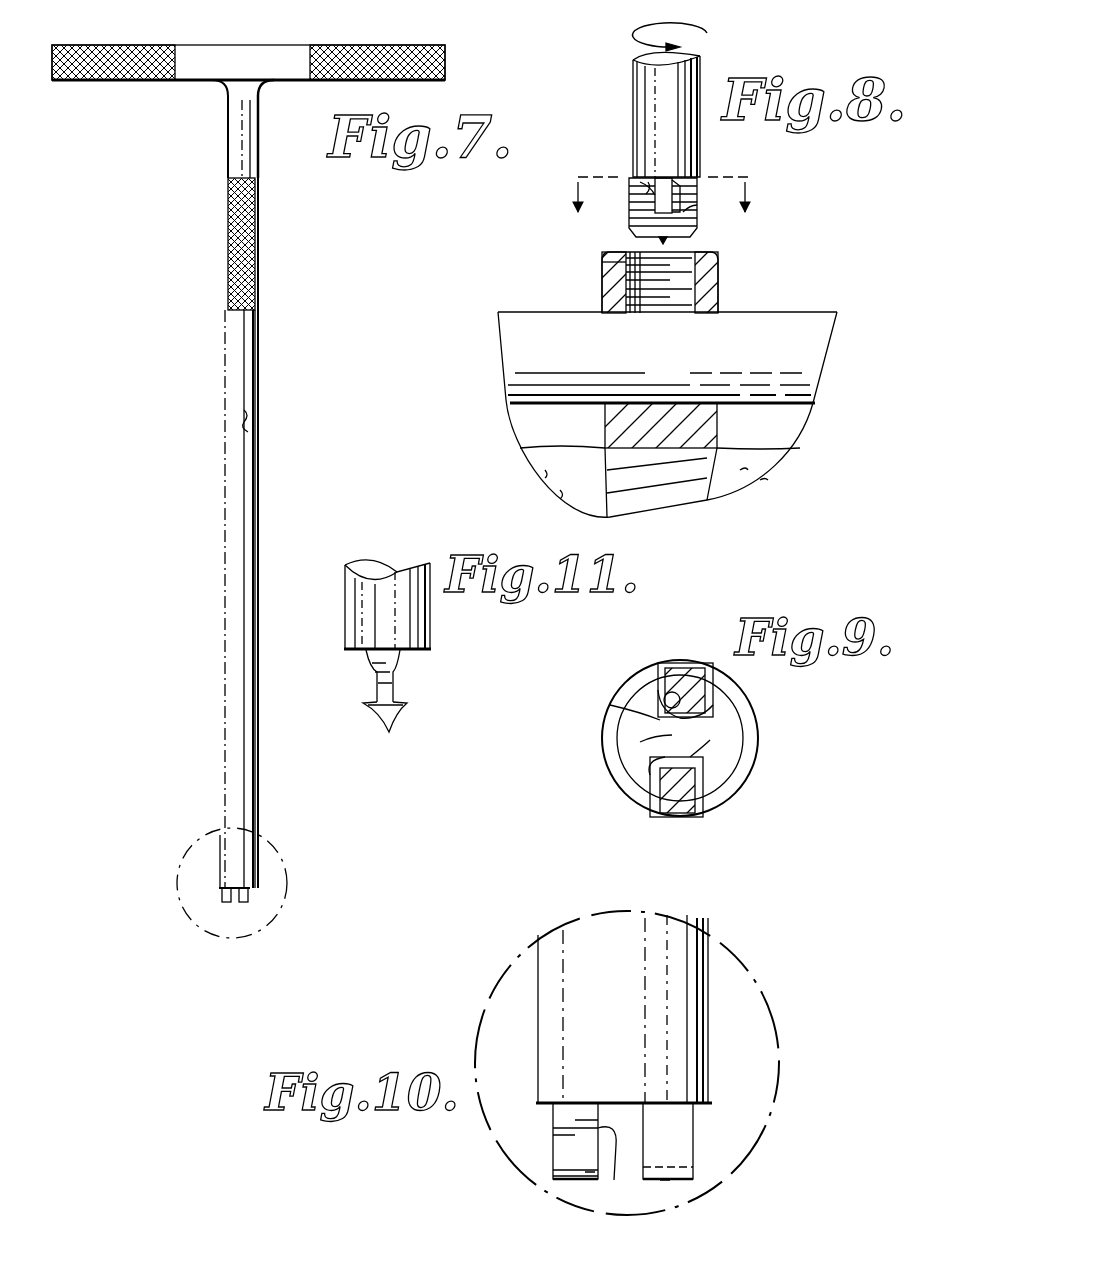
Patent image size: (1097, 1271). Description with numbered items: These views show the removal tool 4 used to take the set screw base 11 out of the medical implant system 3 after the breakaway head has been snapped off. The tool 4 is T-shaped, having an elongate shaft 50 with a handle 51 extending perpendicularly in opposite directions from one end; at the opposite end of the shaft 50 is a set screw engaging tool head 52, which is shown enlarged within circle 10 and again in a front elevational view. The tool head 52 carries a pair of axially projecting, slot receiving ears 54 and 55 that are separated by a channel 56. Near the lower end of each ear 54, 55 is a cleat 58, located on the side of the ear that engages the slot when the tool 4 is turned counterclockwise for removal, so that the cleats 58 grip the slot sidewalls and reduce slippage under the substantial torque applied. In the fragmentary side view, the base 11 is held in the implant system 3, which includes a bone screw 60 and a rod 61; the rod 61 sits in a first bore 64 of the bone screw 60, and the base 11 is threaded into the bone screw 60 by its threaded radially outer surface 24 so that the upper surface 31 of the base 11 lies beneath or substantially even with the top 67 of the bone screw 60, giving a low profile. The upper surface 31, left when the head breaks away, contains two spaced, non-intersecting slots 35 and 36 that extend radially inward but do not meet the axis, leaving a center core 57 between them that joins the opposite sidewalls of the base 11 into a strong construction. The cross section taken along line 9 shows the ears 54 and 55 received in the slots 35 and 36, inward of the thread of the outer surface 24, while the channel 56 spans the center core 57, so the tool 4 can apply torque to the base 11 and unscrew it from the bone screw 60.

In FIG. 8, the medical implant system 3 is at (548, 298).
In FIG. 7, the removal tool 4 is at (226, 410).
In FIG. 8, the removal tool 4 is at (633, 102).
In FIG. 11, the removal tool 4 is at (430, 624).
In FIG. 10, the removal tool 4 is at (708, 1003).
In FIG. 8, the section line 9- 9 is at (663, 201).
In FIG. 7, the circle 10 is at (272, 845).
In FIG. 8, the base 11 is at (632, 218).
In FIG. 9, the base 11 is at (740, 748).
In FIG. 8, the radially outer surface 24 is at (697, 214).
In FIG. 9, the upper surface 31 is at (716, 702).
In FIG. 9, the slot 35 is at (610, 705).
In FIG. 8, the slot 36 is at (648, 188).
In FIG. 9, the slot 36 is at (708, 735).
In FIG. 7, the elongate shaft 50 is at (256, 345).
In FIG. 8, the elongate shaft 50 is at (700, 112).
In FIG. 11, the elongate shaft 50 is at (345, 592).
In FIG. 10, the elongate shaft 50 is at (710, 962).
In FIG. 7, the handle 51 is at (135, 45).
In FIG. 7, the tool head 52 is at (213, 899).
In FIG. 10, the tool head 52 is at (730, 1115).
In FIG. 9, the ear 54 is at (680, 663).
In FIG. 10, the ear 54 is at (560, 1152).
In FIG. 8, the ear 55 is at (692, 186).
In FIG. 9, the ear 55 is at (685, 817).
In FIG. 11, the ear 55 is at (395, 683).
In FIG. 10, the ear 55 is at (693, 1158).
In FIG. 10, the channel 56 is at (614, 1180).
In FIG. 9, the center core 57 is at (640, 742).
In FIG. 11, the cleat 58 is at (385, 729).
In FIG. 10, the cleat 58 is at (592, 1180).
In FIG. 8, the bone screw 60 is at (718, 280).
In FIG. 8, the rod 61 is at (513, 338).
In FIG. 8, the first bore 64 is at (630, 312).
In FIG. 8, the top 67 is at (605, 258).